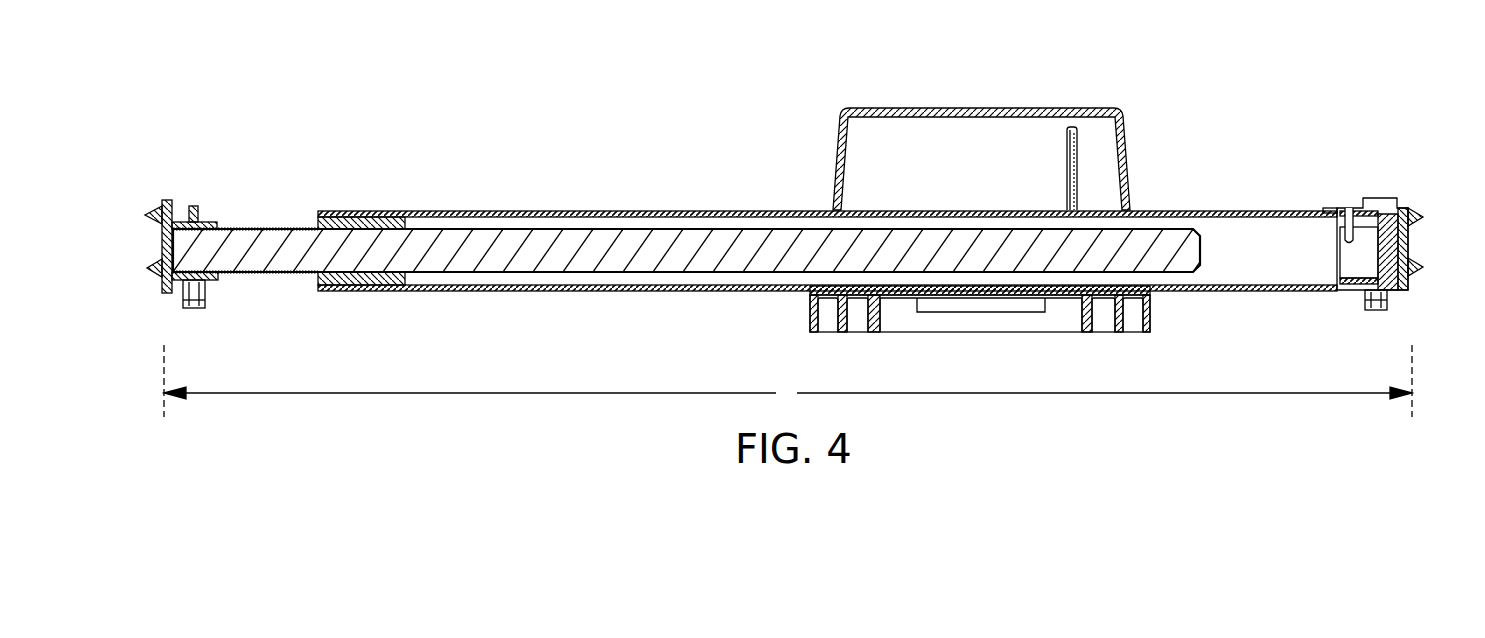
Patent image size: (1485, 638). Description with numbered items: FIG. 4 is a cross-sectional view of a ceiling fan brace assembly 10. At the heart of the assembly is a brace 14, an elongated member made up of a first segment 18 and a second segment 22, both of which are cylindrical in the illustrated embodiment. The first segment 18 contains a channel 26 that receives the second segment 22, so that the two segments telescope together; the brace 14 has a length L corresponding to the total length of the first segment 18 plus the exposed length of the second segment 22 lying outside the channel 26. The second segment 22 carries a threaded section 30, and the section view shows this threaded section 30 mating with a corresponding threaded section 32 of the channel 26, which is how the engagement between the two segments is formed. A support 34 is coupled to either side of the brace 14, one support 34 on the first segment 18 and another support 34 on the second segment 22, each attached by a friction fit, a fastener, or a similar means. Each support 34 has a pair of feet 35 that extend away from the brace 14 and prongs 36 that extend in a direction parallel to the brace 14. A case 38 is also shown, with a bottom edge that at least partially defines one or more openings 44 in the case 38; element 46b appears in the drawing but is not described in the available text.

The ceiling fan brace assembly 10 is at (1193, 108).
The brace 14 is at (524, 193).
The first segment 18 is at (651, 209).
The second segment 22 is at (520, 268).
The channel 26 is at (1254, 266).
The threaded section 30 is at (262, 227).
The threaded section 32 is at (335, 236).
The support 34 is at (159, 177).
The feet 35 is at (197, 306).
The prongs 36 is at (160, 271).
The case 38 is at (885, 94).
The opening 44 is at (906, 309).
The locking pin 46b is at (1032, 107).